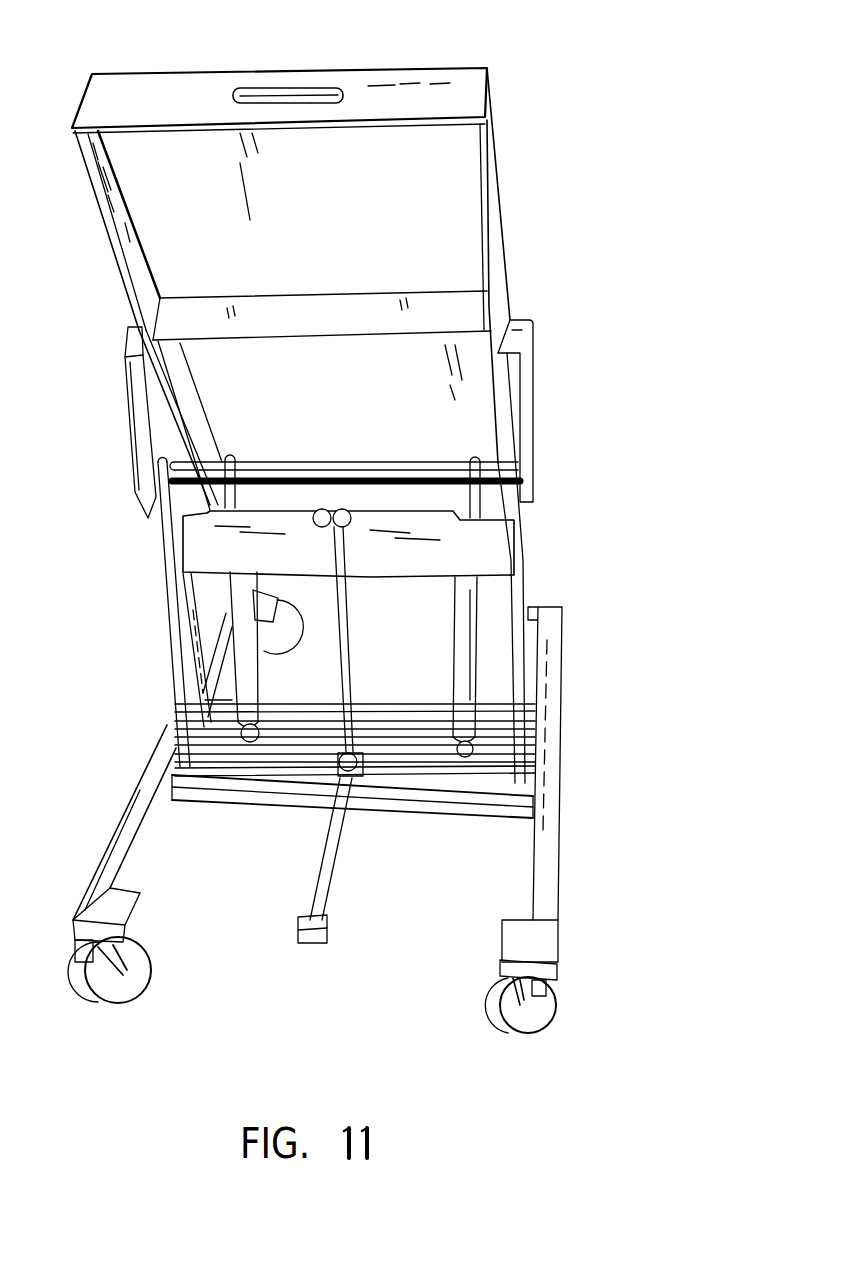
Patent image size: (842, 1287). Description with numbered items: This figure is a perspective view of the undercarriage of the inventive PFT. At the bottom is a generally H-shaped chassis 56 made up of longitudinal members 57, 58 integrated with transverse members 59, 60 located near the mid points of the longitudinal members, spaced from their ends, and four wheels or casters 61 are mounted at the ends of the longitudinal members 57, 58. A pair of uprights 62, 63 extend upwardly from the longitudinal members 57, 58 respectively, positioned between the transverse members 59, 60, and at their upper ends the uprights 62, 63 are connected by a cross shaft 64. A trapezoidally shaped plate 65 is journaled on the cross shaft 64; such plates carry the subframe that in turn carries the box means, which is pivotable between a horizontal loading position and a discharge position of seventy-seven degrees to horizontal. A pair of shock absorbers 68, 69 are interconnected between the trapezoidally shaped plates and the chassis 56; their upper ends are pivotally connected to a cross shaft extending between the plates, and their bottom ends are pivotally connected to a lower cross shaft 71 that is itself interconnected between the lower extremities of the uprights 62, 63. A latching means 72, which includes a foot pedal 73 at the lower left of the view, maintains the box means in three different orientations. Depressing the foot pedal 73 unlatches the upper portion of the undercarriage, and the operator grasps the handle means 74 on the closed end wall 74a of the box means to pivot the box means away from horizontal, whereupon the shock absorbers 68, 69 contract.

The handle means 74 is at (330, 88).
The closed end wall 74a is at (424, 66).
The cross shaft 64 is at (340, 508).
The trapezoidally shaped plate 65 is at (527, 353).
The upright 63 is at (160, 552).
The shock absorber 69 is at (243, 640).
The shock absorber 68 is at (470, 610).
The latching means 72 is at (348, 630).
The upright 62 is at (520, 632).
The transverse member 60 is at (400, 722).
The longitudinal member 58 is at (120, 847).
The lower cross shaft 71 is at (290, 733).
The transverse member 59 is at (423, 802).
The foot pedal 73 is at (326, 935).
The chassis 56 is at (548, 873).
The longitudinal member 57 is at (547, 937).
The caster 61 is at (130, 987).